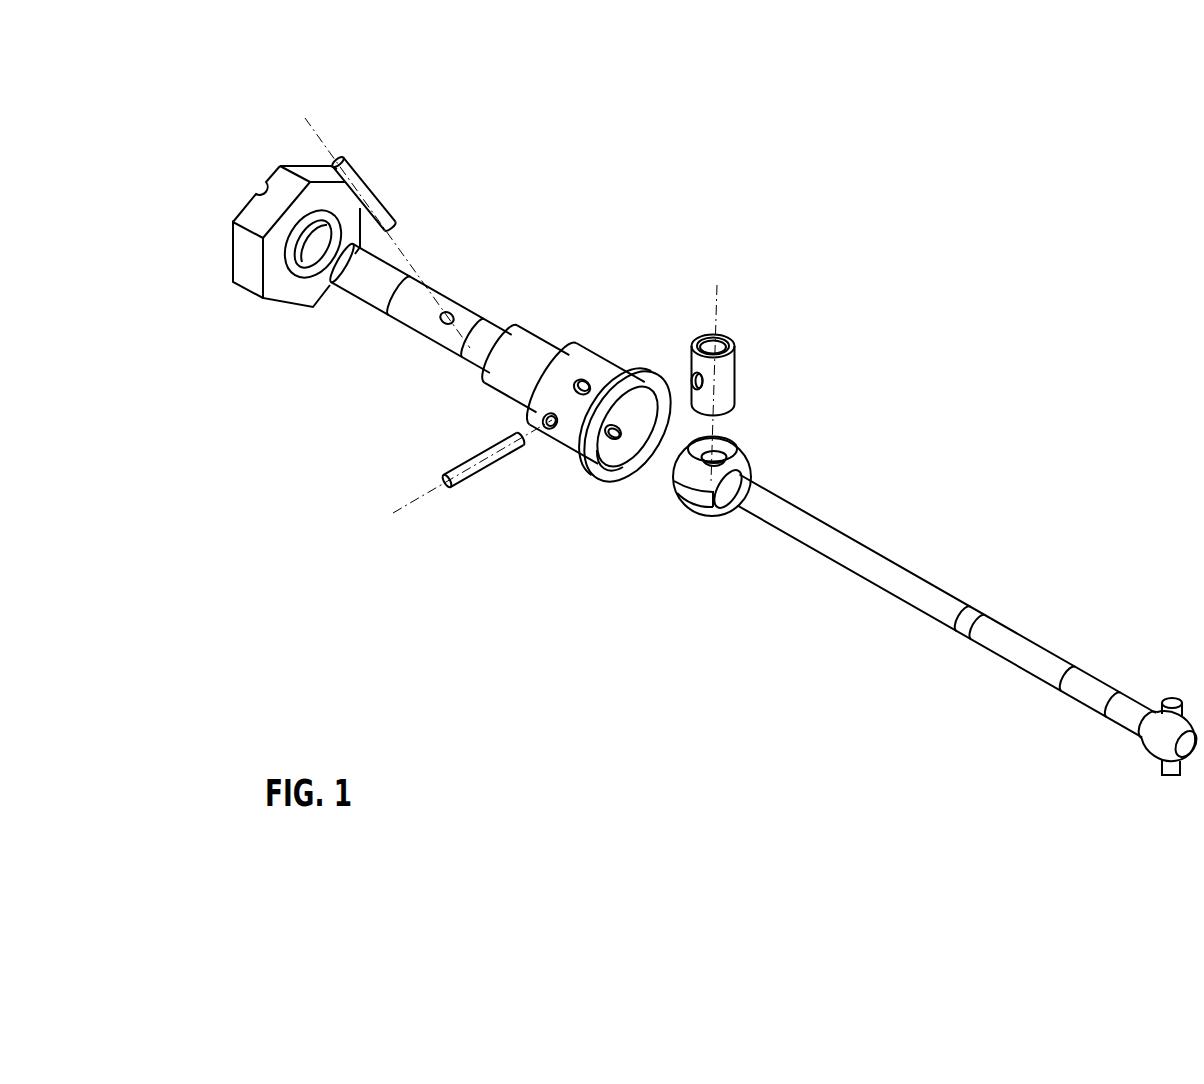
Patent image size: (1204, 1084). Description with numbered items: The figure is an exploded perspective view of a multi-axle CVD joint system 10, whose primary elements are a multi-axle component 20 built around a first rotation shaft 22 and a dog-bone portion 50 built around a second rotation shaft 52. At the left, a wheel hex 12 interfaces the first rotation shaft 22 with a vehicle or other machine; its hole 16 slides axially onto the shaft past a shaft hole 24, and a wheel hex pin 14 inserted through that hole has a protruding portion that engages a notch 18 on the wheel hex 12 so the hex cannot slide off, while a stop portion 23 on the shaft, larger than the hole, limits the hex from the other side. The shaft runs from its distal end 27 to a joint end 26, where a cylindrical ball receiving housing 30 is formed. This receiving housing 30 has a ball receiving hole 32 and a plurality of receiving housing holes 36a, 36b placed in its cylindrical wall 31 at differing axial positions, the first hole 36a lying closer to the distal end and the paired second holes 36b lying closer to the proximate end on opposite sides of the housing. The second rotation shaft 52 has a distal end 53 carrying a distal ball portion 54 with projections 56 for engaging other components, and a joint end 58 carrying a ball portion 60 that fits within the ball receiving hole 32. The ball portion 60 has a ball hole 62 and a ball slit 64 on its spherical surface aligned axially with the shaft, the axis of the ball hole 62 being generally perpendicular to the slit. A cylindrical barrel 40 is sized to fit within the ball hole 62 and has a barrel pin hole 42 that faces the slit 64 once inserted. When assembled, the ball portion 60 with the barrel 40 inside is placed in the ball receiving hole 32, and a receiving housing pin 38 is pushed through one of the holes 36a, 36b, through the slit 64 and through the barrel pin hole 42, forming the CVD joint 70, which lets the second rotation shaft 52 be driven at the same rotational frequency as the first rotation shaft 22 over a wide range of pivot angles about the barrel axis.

The multi-axle CVD joint system 10 is at (912, 170).
The wheel hex 12 is at (237, 240).
The wheel hex pin 14 is at (347, 158).
The hole 16 is at (307, 249).
The notch 18 is at (258, 191).
The multi-axle component 20 is at (523, 250).
The first rotation shaft 22 is at (388, 264).
The stop portion 23 is at (511, 328).
The shaft hole 24 is at (440, 323).
The joint end 26 is at (645, 368).
The distal end 27 is at (338, 293).
The ball receiving housing 30 is at (573, 437).
The cylindrical wall 31 is at (610, 372).
The ball receiving hole 32 is at (607, 450).
The first receiving housing hole 36a is at (541, 419).
The second receiving housing hole 36b is at (587, 377).
The receiving housing pin 38 is at (463, 460).
The cylindrical barrel 40 is at (738, 347).
The barrel pin hole 42 is at (693, 378).
The dog-bone portion 50 is at (1023, 508).
The second rotation shaft 52 is at (862, 538).
The distal end 53 is at (1183, 622).
The distal ball portion 54 is at (1150, 751).
The projections 56 is at (1171, 698).
The joint end 58 is at (747, 427).
The ball portion 60 is at (750, 463).
The ball hole 62 is at (717, 445).
The ball slit 64 is at (698, 497).
The CVD joint 70 is at (625, 595).